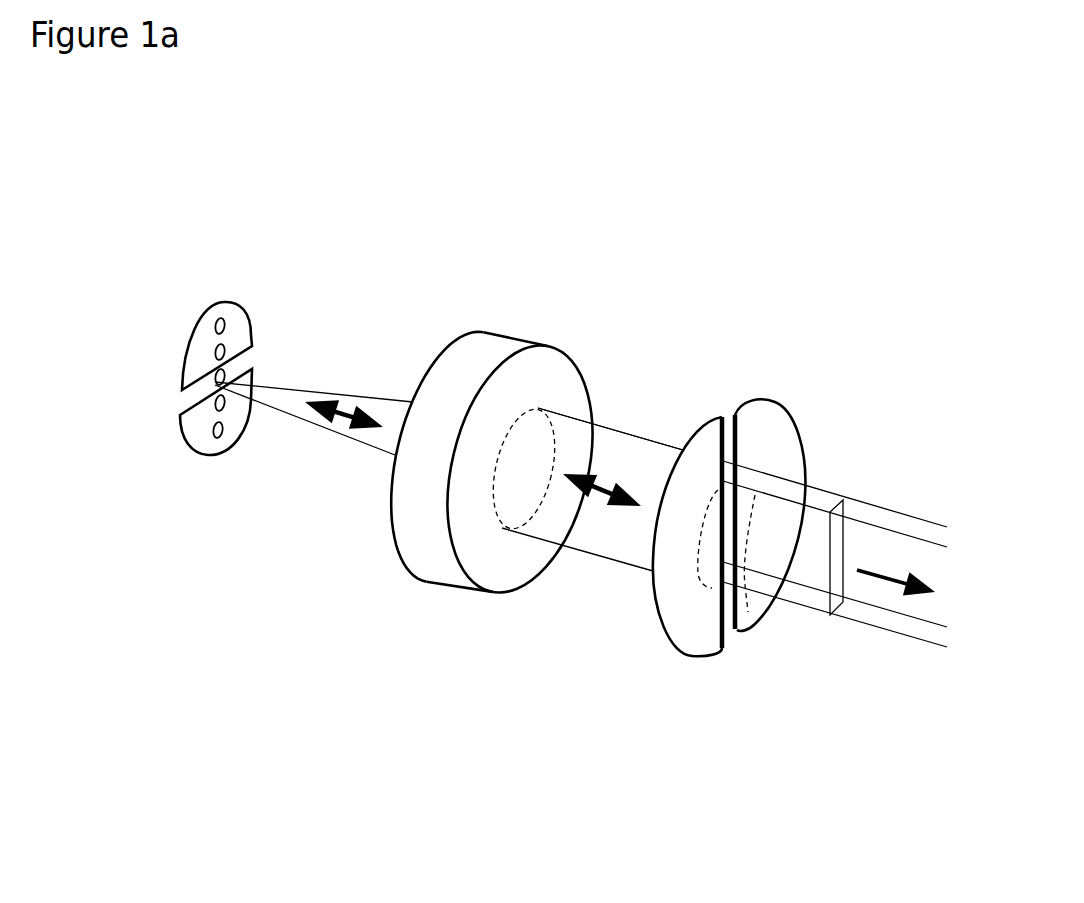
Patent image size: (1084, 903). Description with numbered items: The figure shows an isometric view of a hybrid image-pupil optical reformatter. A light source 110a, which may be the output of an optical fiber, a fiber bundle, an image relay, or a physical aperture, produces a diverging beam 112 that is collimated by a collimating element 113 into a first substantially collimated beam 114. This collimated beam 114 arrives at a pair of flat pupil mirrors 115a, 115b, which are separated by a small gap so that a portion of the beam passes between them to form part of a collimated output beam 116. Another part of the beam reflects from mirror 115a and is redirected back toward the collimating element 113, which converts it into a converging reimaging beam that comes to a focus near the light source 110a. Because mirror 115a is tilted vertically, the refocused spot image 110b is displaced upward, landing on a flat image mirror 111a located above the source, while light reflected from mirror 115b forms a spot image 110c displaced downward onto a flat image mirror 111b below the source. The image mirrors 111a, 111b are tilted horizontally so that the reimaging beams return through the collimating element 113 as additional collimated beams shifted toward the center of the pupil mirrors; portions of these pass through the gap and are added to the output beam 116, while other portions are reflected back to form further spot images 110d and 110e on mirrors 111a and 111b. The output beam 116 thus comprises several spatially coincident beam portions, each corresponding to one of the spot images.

The light source 110a is at (250, 374).
The refocused spot image 110b is at (216, 346).
The refocused spot image 110c is at (217, 410).
The spot image 110d is at (221, 318).
The spot image 110e is at (217, 438).
The flat mirror 111a is at (245, 335).
The flat mirror 111b is at (249, 403).
The beam 112 is at (333, 432).
The collimating element 113 is at (492, 352).
The first substantially collimated beam 114 is at (610, 453).
The mirror 115a is at (696, 620).
The mirror 115b is at (747, 607).
The collimated output beam 116 is at (857, 542).